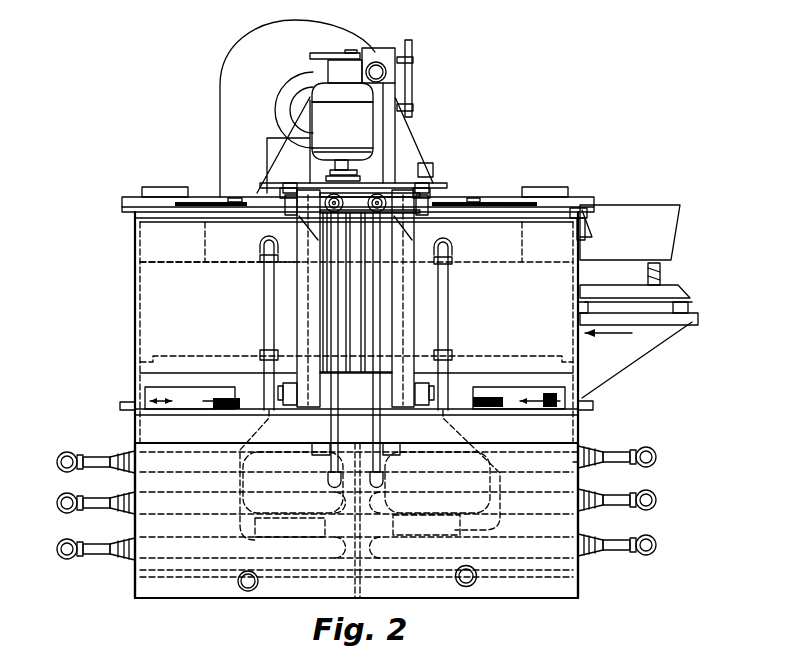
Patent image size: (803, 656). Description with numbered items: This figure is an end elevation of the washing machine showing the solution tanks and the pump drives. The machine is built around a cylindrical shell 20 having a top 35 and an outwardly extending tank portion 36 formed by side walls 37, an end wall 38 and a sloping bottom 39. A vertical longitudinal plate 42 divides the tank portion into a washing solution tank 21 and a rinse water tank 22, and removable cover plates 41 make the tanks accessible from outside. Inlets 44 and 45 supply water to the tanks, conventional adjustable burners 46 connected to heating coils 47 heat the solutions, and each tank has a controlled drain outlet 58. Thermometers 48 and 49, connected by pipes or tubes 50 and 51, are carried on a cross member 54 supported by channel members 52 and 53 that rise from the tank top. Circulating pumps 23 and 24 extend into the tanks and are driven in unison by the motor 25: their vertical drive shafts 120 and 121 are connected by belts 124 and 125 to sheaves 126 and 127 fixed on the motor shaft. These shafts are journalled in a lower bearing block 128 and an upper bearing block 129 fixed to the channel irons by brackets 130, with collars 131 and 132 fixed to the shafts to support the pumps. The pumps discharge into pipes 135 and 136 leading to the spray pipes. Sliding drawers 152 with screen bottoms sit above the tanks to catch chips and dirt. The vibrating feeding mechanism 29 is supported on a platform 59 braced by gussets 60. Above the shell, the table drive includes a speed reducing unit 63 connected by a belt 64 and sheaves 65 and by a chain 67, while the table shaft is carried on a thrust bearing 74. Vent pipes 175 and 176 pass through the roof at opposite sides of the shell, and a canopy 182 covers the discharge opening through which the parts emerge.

The cylindrical shell 20 is at (620, 335).
The washing solution tank 21 is at (542, 579).
The rinse water tank 22 is at (190, 553).
The circulating pump 23 is at (448, 529).
The circulating pump 24 is at (313, 531).
The motor 25 is at (342, 121).
The vibrating feeding mechanism 29 is at (672, 258).
The top 35 is at (590, 201).
The tank portion 36 is at (565, 479).
The side walls 37 is at (114, 520).
The end wall 38 is at (425, 591).
The sloping bottom 39 is at (245, 598).
The removable cover plates 41 is at (580, 411).
The vertical longitudinal plate 42 is at (357, 543).
The inlet 44 is at (595, 407).
The inlet 45 is at (120, 406).
The adjustable burners 46 is at (58, 546).
The heating coils 47 is at (524, 504).
The thermometer 48 is at (330, 244).
The thermometer 49 is at (351, 236).
The pipe or tube 50 is at (336, 321).
The pipe or tube 51 is at (373, 345).
The channel member 52 is at (321, 270).
The channel member 53 is at (395, 278).
The cross member 54 is at (361, 199).
The drain outlet 58 is at (258, 585).
The platform 59 is at (696, 320).
The gussets 60 is at (626, 357).
The speed reducing unit 63 is at (378, 55).
The belt 64 is at (413, 90).
The sheaves 65 is at (413, 52).
The chain 67 is at (325, 57).
The thrust bearing 74 is at (389, 110).
The vertical drive shaft 120 is at (423, 299).
The vertical drive shaft 121 is at (290, 288).
The belt 124 is at (440, 185).
The belt 125 is at (278, 185).
The sheave 126 is at (332, 172).
The sheave 127 is at (329, 180).
The lower bearing block 128 is at (283, 395).
The upper bearing block 129 is at (283, 192).
The brackets 130 is at (262, 257).
The collar 131 is at (288, 207).
The collar 132 is at (280, 391).
The discharge pipe 135 is at (449, 312).
The discharge pipe 136 is at (265, 316).
The sliding drawer 152 is at (545, 402).
The vent pipe 175 is at (543, 190).
The vent pipe 176 is at (163, 193).
The canopy 182 is at (203, 202).